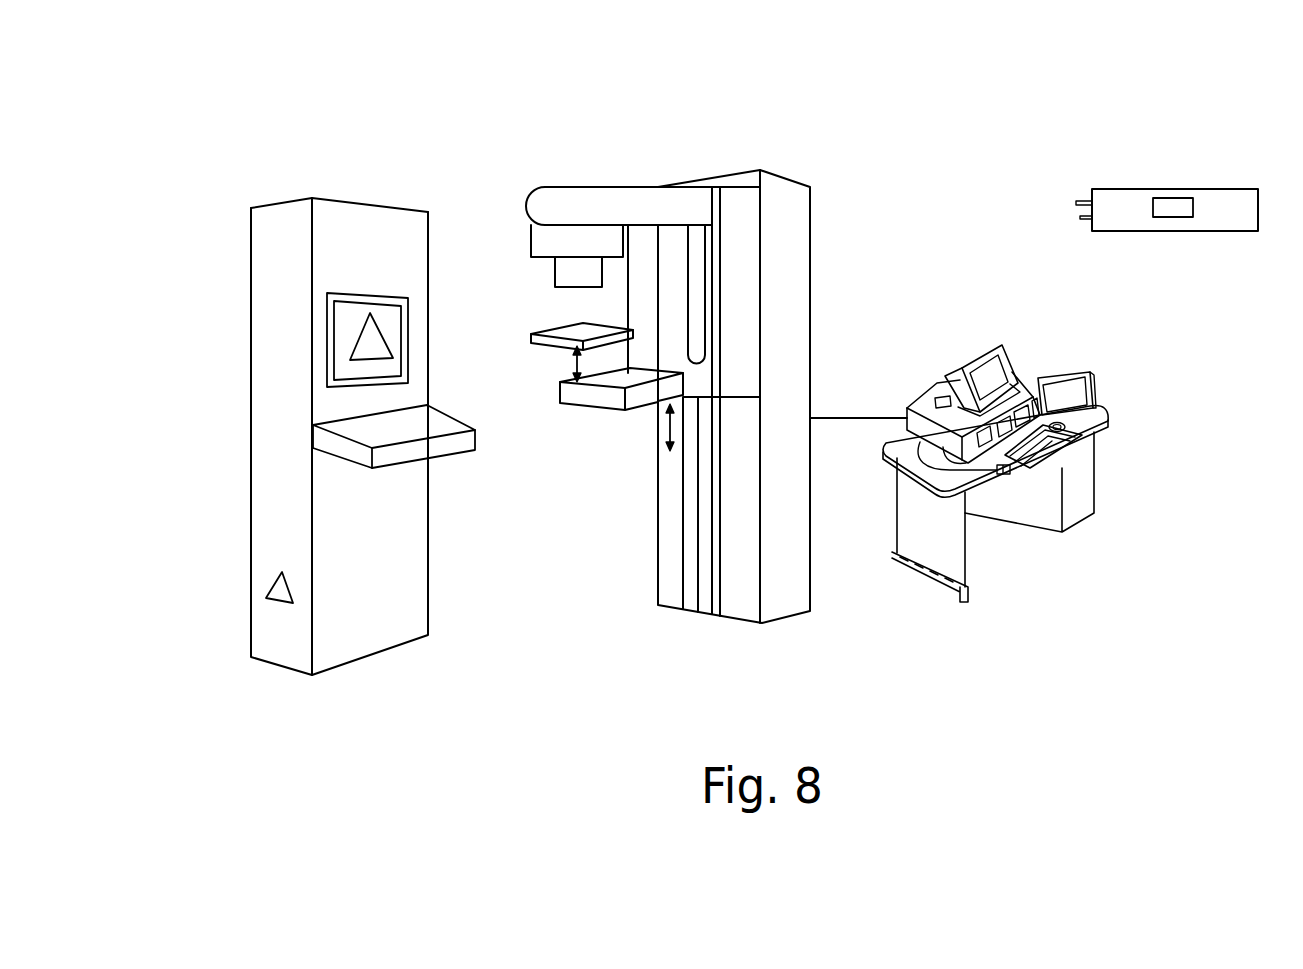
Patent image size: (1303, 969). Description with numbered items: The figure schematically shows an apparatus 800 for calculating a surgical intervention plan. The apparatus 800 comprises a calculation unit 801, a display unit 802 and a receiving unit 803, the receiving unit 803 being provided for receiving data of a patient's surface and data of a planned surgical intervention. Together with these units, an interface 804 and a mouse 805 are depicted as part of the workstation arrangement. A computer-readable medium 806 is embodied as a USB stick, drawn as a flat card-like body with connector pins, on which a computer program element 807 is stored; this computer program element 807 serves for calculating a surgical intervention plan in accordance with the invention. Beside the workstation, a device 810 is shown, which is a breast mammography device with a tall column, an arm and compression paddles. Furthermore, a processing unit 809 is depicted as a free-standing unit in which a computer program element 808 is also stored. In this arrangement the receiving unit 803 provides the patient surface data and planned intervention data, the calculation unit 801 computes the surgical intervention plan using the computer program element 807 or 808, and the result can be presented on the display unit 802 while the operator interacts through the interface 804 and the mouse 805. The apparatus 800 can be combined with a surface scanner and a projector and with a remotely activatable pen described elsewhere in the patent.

The apparatus 800 is at (925, 156).
The calculation unit 801 is at (923, 403).
The display unit 802 is at (992, 375).
The receiving unit 803 is at (1025, 382).
The interface 804 is at (1090, 437).
The mouse 805 is at (1003, 480).
The computer-readable medium 806 is at (1152, 189).
The computer program element 807 is at (1175, 218).
The computer program element 808 is at (268, 582).
The processing unit 809 is at (362, 199).
The breast mammography device 810 is at (818, 230).